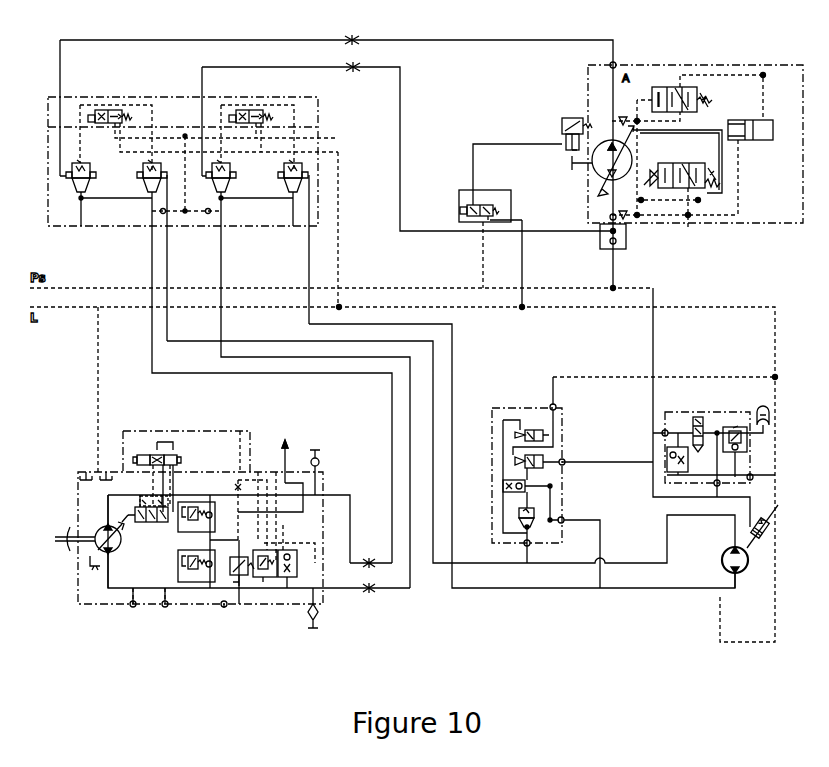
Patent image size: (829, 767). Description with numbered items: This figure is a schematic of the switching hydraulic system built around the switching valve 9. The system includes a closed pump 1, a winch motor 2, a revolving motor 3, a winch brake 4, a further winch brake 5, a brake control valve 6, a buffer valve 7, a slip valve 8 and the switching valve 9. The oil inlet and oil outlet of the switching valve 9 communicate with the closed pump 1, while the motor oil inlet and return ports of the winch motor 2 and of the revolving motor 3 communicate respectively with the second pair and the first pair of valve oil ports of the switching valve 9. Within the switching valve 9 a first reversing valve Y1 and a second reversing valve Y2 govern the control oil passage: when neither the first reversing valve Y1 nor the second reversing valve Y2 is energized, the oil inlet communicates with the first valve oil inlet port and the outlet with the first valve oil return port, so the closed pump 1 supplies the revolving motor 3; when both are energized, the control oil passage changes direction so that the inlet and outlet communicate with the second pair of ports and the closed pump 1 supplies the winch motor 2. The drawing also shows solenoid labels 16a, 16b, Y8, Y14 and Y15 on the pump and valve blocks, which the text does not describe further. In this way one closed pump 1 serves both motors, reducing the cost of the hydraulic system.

The closed pump 1 is at (93, 505).
The winch motor 2 is at (640, 93).
The revolving motor 3 is at (725, 573).
The winch brake 4 is at (563, 118).
The winch brake 5 is at (770, 514).
The brake control valve 6 is at (461, 192).
The buffer valve 7 is at (732, 415).
The slip valve 8 is at (538, 418).
The switching valve 9 is at (60, 197).
The proportional solenoid 16a is at (137, 454).
The proportional solenoid 16b is at (181, 454).
The first reversing valve Y1 is at (118, 118).
The second reversing valve Y2 is at (259, 118).
The solenoid valve Y8 is at (682, 169).
The solenoid valve Y14 is at (549, 436).
The solenoid valve Y15 is at (698, 426).